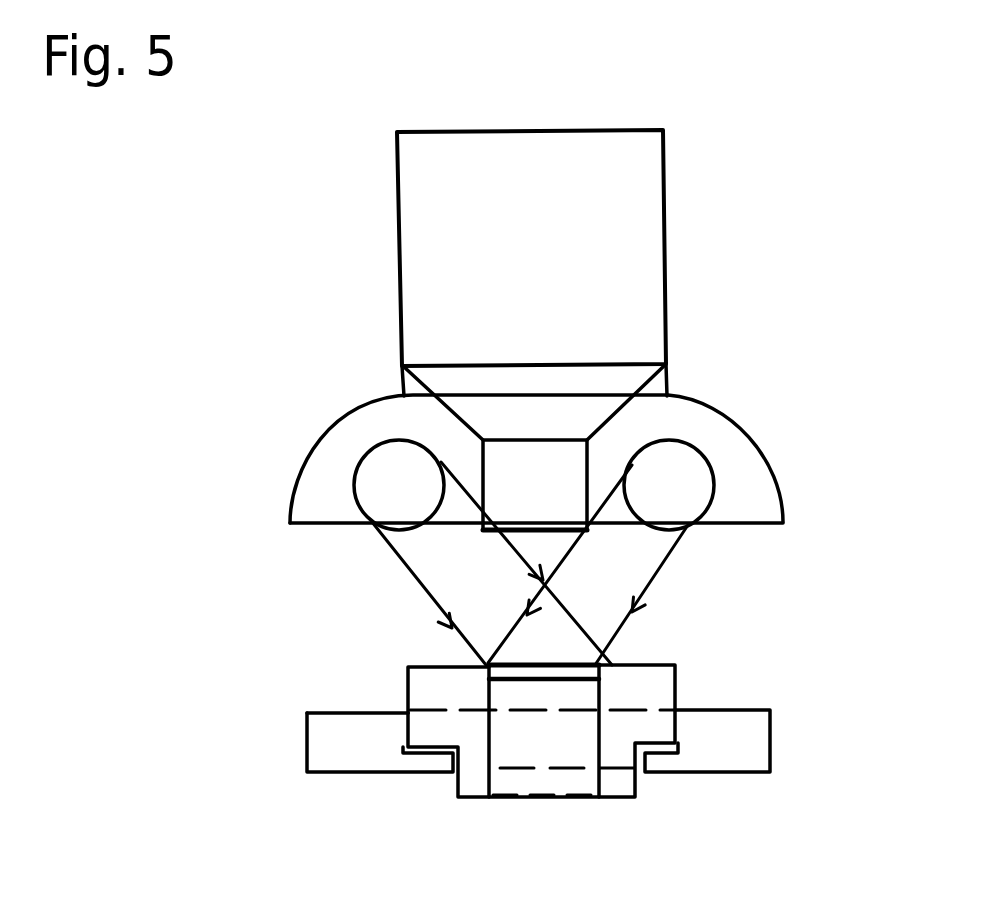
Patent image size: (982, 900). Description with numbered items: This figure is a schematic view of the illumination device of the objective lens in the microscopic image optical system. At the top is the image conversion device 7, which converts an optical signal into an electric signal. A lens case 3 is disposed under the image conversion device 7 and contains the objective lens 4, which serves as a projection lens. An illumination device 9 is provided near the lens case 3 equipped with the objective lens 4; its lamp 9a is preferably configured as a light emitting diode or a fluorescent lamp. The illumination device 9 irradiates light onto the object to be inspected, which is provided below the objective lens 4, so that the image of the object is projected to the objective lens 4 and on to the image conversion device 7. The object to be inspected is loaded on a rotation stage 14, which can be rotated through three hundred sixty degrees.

The image conversion device 7 is at (620, 280).
The lens case 3 is at (477, 378).
The illumination device 9 is at (727, 413).
The lamp 9a is at (670, 488).
The objective lens 4 is at (538, 508).
The rotation stage 14 is at (662, 690).